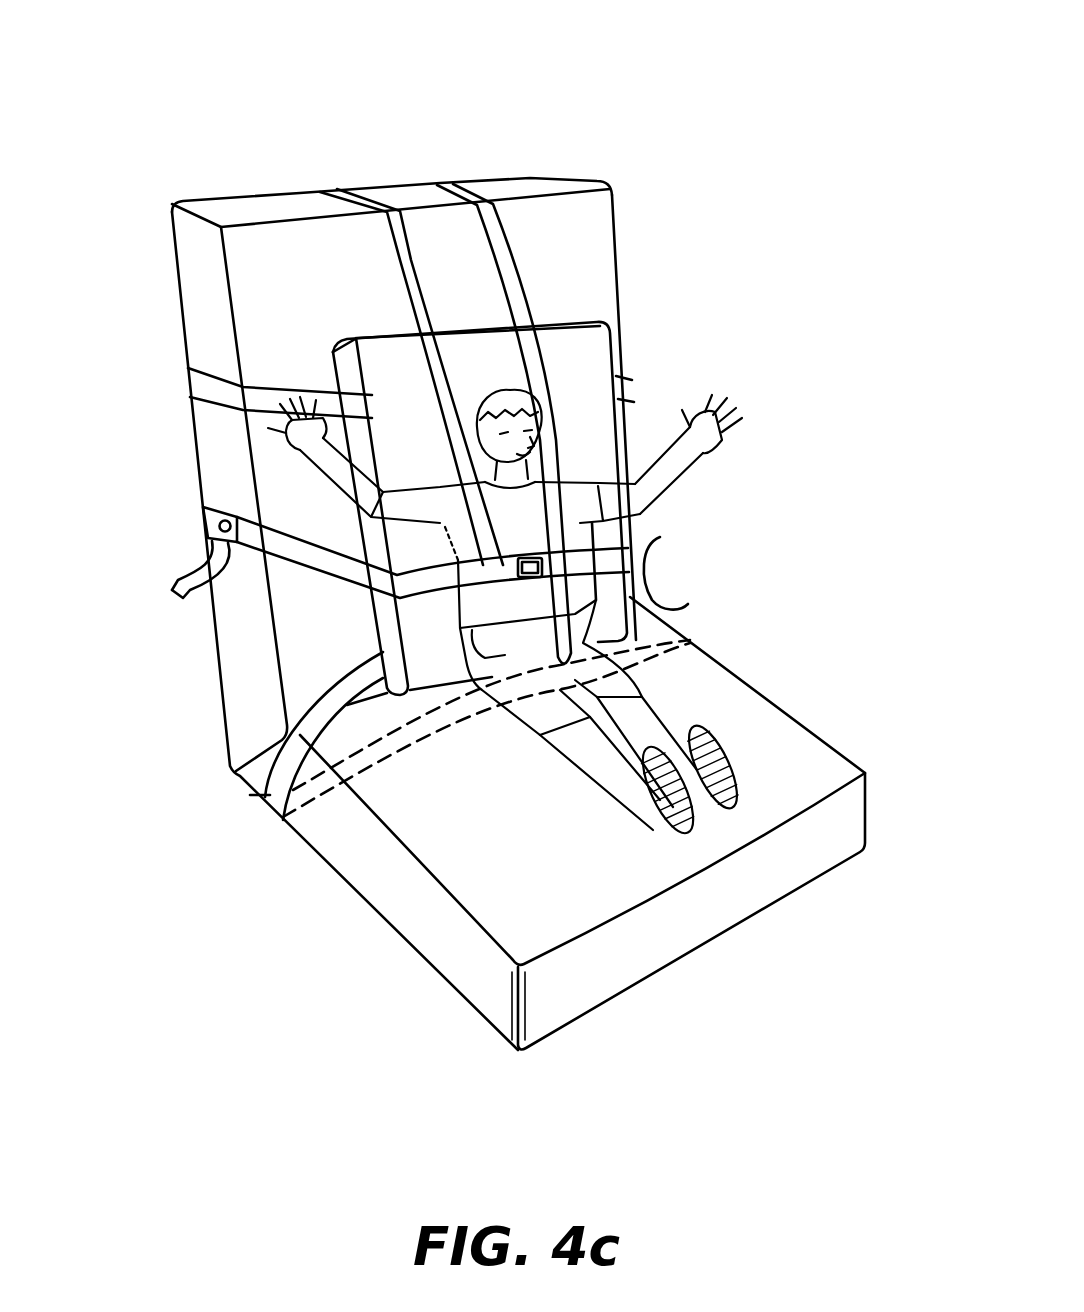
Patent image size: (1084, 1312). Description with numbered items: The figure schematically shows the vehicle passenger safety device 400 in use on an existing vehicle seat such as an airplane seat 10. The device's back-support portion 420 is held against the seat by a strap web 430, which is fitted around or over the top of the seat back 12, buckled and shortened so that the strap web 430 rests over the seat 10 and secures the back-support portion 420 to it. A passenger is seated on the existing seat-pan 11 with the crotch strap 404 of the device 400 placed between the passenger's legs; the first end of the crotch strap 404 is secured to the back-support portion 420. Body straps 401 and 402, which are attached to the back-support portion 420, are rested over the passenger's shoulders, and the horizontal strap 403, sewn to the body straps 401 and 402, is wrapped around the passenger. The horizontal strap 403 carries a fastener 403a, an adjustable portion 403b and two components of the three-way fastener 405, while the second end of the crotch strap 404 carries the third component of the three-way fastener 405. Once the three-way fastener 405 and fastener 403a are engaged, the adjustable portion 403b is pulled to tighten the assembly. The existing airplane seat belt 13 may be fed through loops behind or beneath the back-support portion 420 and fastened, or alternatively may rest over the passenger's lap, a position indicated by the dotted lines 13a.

The vehicle passenger safety device 400 is at (318, 79).
The seat back 12 is at (233, 207).
The airplane seat 10 is at (190, 443).
The strap web 430 is at (187, 380).
The body strap 401 is at (423, 333).
The body strap 402 is at (538, 355).
The back-support portion 420 is at (480, 513).
The horizontal strap 403 is at (203, 513).
The fastener 403a is at (210, 530).
The adjustable portion 403b is at (183, 585).
The three-way fastener 405 is at (565, 488).
The crotch strap 404 is at (640, 560).
The existing airplane seat belt 13 is at (267, 793).
The dotted lines 13a is at (697, 643).
The seat-pan 11 is at (840, 772).